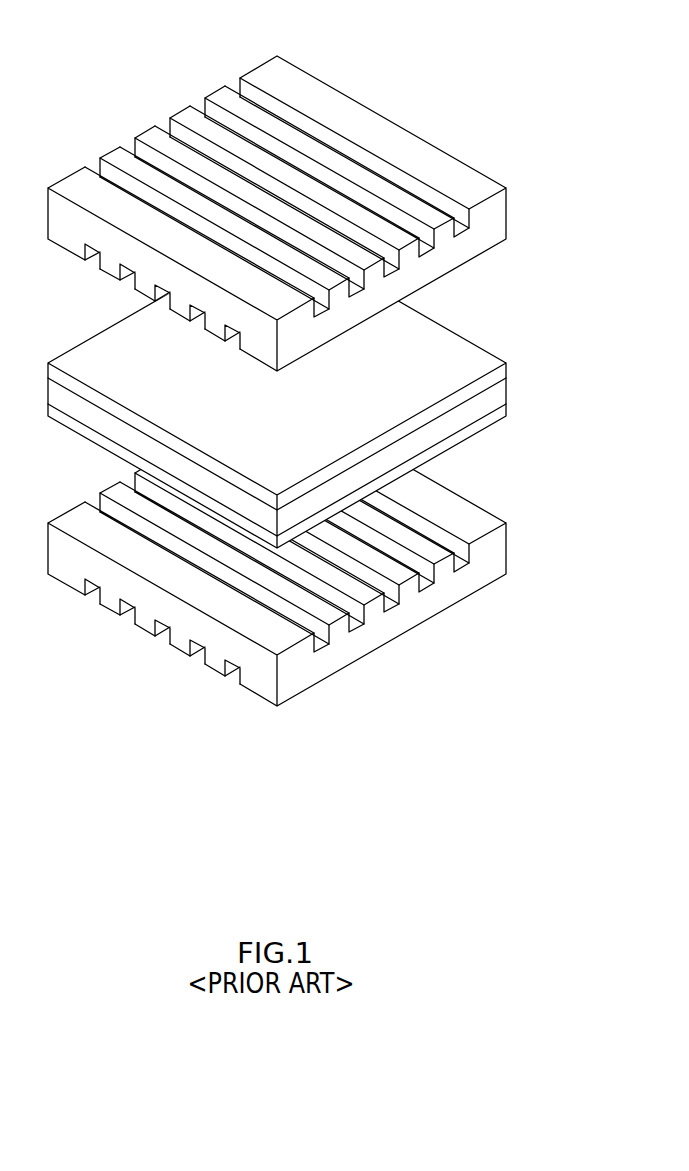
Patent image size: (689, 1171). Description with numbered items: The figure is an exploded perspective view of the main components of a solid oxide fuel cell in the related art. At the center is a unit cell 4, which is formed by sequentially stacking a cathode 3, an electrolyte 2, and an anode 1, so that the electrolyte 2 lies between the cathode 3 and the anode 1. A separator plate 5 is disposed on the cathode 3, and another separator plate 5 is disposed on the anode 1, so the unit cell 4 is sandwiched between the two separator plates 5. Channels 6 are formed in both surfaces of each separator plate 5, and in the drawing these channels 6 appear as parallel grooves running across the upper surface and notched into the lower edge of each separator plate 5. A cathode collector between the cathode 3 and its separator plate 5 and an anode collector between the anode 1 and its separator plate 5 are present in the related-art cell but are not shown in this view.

The anode 1 is at (303, 476).
The electrolyte 2 is at (507, 390).
The cathode 3 is at (507, 370).
The unit cell 4 is at (318, 389).
The separator plate 5 is at (497, 220).
The channel 6 is at (97, 163).